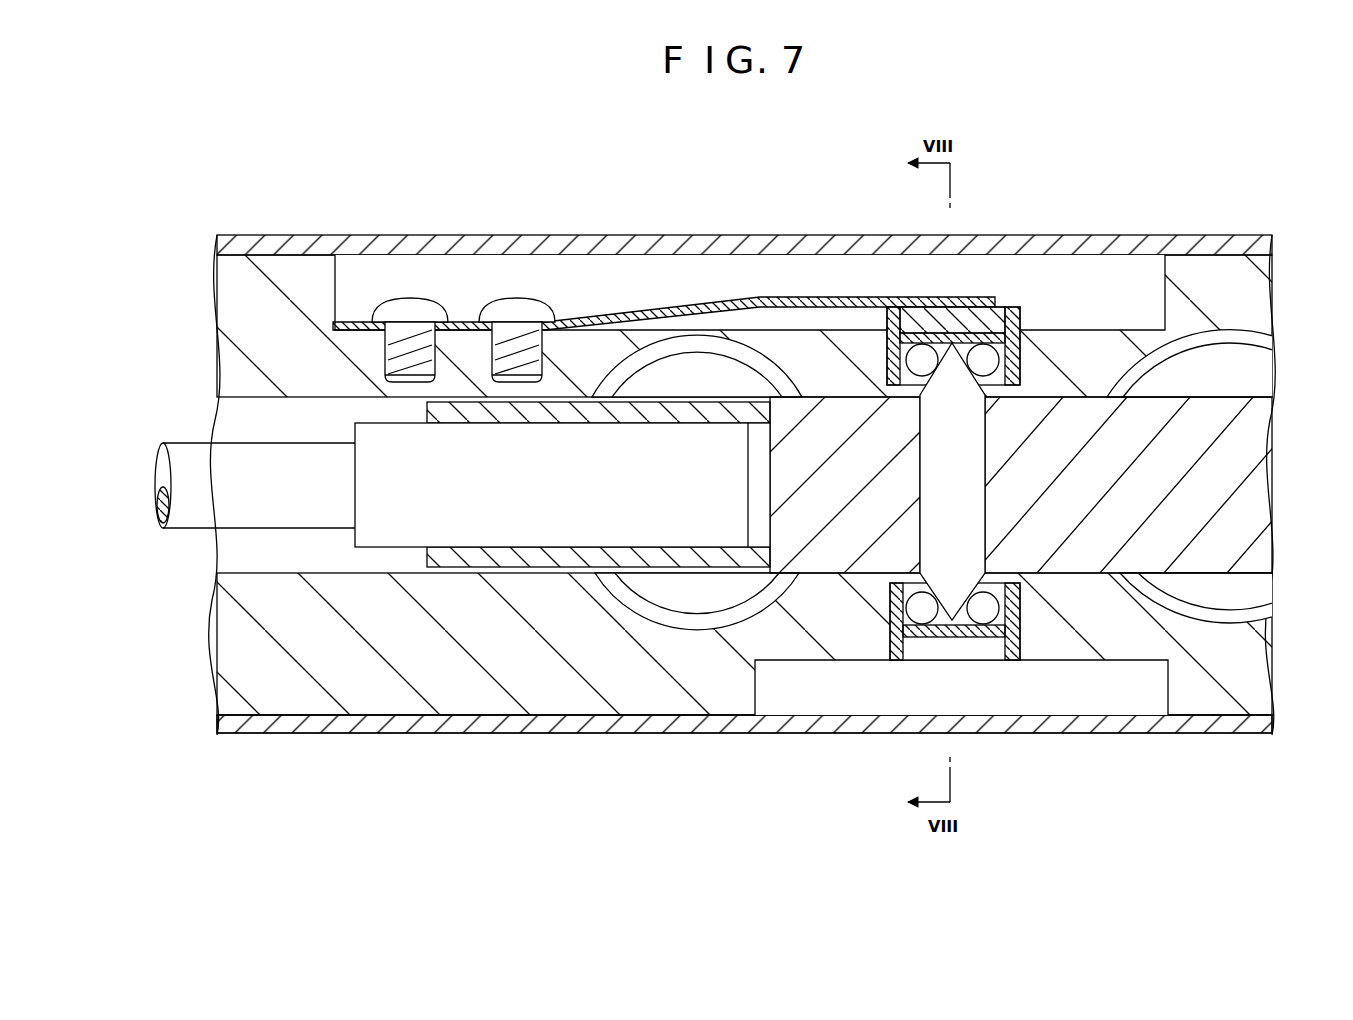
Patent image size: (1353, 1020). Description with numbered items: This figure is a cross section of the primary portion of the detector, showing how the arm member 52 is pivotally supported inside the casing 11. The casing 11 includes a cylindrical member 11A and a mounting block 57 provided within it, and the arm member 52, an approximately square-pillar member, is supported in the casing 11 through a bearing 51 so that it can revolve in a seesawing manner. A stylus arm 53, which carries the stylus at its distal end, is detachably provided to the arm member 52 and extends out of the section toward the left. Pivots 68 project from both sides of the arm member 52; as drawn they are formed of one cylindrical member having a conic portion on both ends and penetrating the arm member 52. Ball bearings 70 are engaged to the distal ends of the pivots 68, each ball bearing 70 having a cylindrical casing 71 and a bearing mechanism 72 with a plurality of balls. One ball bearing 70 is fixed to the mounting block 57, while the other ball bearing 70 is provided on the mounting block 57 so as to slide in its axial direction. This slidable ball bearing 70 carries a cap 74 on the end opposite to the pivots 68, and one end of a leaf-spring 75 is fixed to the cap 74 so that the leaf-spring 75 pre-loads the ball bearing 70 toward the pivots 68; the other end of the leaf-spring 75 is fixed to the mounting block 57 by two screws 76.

The casing 11 is at (726, 742).
The cylindrical member 11A is at (573, 738).
The bearing 51 is at (1040, 308).
The arm member 52 is at (1255, 491).
The stylus arm 53 is at (233, 513).
The mounting block 57 is at (1120, 647).
The pivots 68 is at (1018, 378).
The ball bearing 70 is at (936, 489).
The cylindrical casing 71 is at (1018, 312).
The bearing mechanism 72 is at (983, 350).
The cap 74 is at (922, 312).
The leaf-spring 75 is at (748, 298).
The screws 76 is at (410, 308).